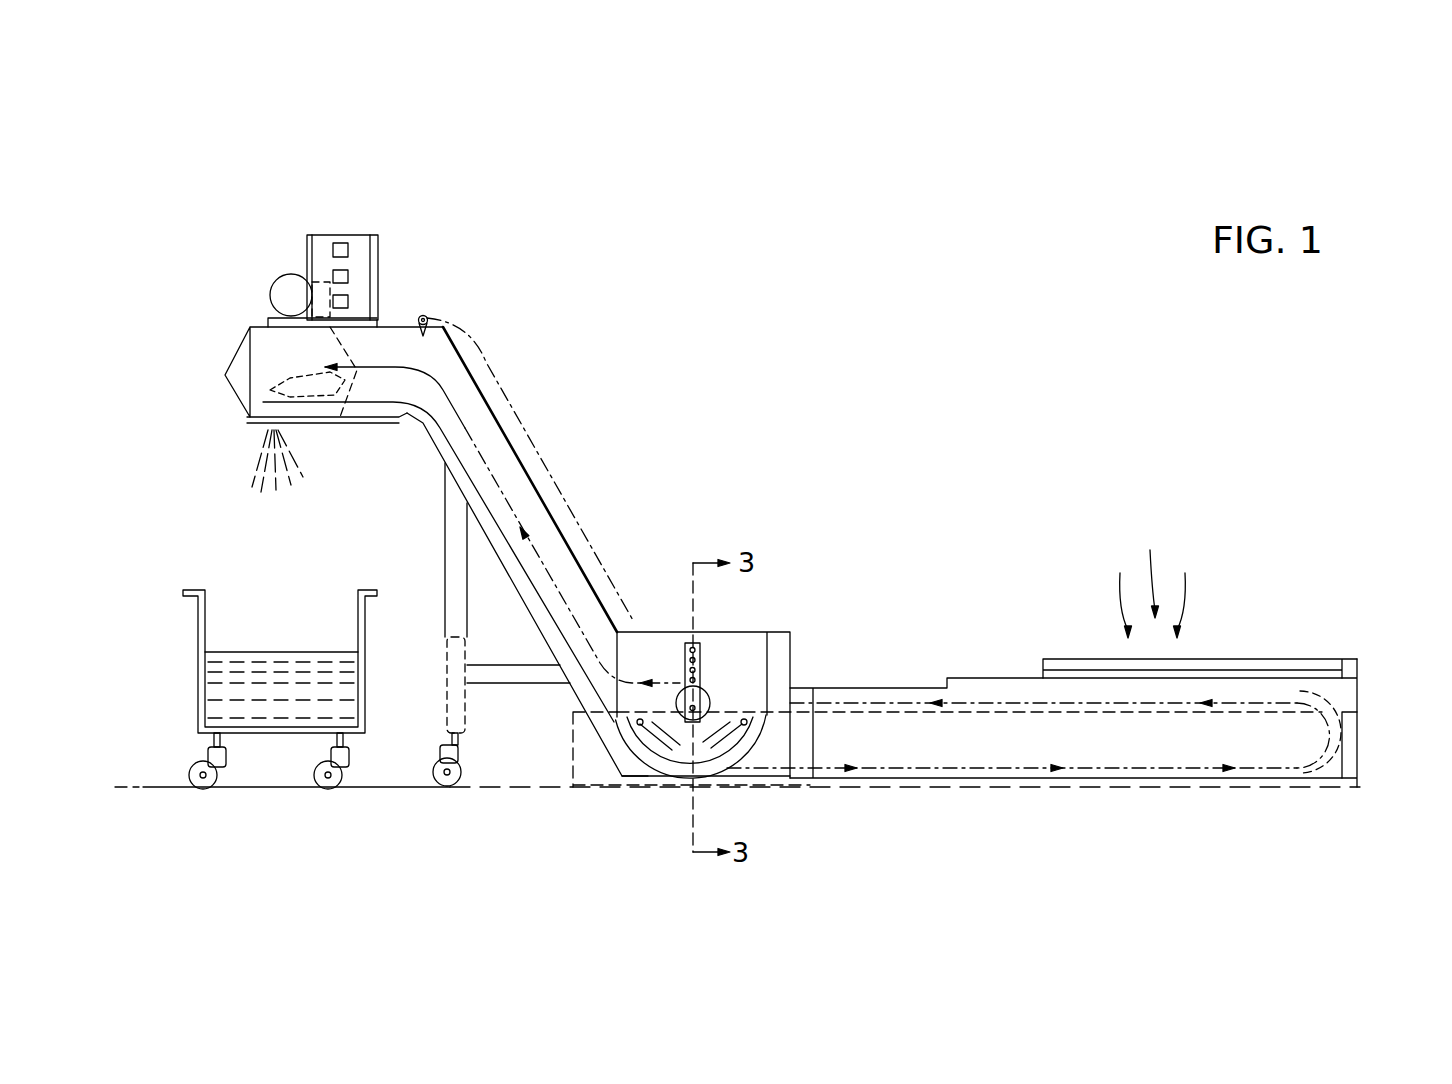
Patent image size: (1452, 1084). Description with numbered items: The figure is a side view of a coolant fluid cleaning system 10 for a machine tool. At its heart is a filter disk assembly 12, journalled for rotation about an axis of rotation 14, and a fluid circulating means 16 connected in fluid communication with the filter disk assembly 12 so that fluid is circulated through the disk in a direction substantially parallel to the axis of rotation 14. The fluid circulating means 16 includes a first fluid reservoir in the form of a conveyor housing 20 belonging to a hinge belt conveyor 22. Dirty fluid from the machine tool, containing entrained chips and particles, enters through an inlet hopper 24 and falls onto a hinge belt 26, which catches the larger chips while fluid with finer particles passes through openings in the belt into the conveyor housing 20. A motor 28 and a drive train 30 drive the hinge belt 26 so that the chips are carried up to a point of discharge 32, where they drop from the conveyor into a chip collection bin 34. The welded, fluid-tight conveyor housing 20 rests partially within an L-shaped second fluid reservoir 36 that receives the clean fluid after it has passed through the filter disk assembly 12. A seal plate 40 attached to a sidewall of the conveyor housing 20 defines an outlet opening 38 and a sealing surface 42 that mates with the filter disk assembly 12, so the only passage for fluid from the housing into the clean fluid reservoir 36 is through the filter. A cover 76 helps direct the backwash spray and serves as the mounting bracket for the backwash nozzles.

The coolant fluid cleaning system 10 is at (1110, 463).
The filter disk assembly 12 is at (665, 778).
The axis of rotation 14 is at (702, 702).
The fluid circulating means 16 is at (1027, 805).
The conveyor housing 20 is at (517, 455).
The hinge belt conveyor 22 is at (470, 368).
The inlet hopper 24 is at (1243, 650).
The hinge belt 26 is at (567, 610).
The motor 28 is at (280, 297).
The drive train 30 is at (245, 365).
The point of discharge 32 is at (242, 437).
The chip collection bin 34 is at (368, 617).
The second fluid reservoir 36 is at (1357, 750).
The outlet opening 38 is at (699, 748).
The seal plate 40 is at (887, 747).
The sealing surface 42 is at (740, 757).
The cover 76 is at (737, 640).